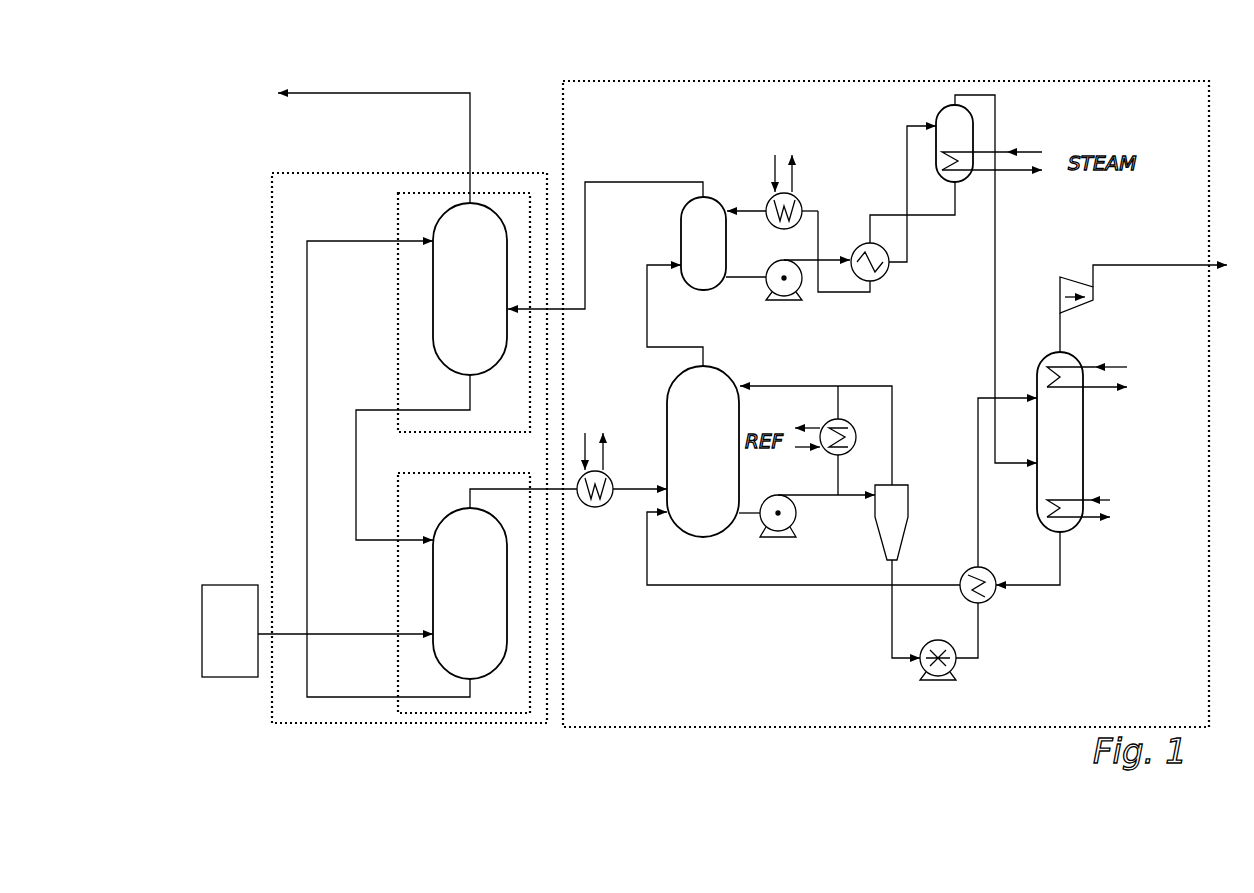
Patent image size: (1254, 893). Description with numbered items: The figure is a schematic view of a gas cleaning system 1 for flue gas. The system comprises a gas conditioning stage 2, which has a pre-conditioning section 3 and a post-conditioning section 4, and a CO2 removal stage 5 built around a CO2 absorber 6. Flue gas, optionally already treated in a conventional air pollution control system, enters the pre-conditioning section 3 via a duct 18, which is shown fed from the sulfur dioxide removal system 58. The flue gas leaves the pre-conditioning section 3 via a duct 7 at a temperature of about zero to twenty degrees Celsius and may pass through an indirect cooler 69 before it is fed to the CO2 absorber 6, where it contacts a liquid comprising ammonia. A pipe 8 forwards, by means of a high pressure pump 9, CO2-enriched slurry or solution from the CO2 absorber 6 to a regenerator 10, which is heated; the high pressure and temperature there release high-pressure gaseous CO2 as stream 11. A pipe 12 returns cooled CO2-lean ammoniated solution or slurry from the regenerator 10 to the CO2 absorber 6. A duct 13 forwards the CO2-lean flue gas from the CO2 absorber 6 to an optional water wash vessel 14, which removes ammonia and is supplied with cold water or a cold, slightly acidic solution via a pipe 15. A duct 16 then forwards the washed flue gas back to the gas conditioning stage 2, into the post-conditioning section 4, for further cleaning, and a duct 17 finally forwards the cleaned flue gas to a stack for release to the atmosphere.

The gas cleaning system 1 is at (497, 80).
The gas conditioning stage 2 is at (272, 173).
The pre-conditioning section 3 is at (398, 590).
The post-conditioning section 4 is at (398, 300).
The CO2 removal stage 5 is at (723, 81).
The CO2 absorber 6 is at (730, 372).
The duct 7 is at (497, 489).
The pipe 8 is at (892, 620).
The high pressure pump 9 is at (920, 666).
The regenerator 10 is at (1083, 437).
The stream 11 is at (1146, 266).
The pipe 12 is at (765, 586).
The duct 13 is at (652, 306).
The water wash vessel 14 is at (712, 200).
The pipe 15 is at (818, 205).
The duct 16 is at (643, 182).
The duct 17 is at (386, 93).
The duct 18 is at (343, 636).
The sulfur dioxide removal system 58 is at (236, 585).
The indirect cooler 69 is at (595, 507).